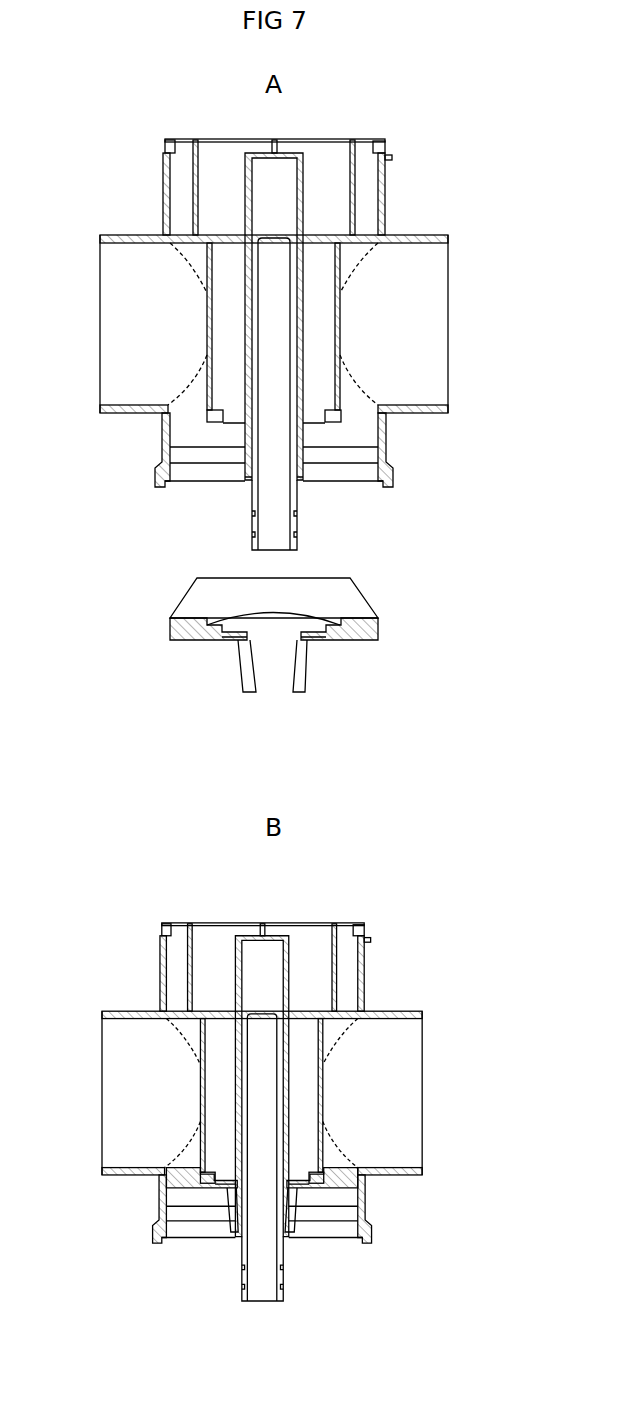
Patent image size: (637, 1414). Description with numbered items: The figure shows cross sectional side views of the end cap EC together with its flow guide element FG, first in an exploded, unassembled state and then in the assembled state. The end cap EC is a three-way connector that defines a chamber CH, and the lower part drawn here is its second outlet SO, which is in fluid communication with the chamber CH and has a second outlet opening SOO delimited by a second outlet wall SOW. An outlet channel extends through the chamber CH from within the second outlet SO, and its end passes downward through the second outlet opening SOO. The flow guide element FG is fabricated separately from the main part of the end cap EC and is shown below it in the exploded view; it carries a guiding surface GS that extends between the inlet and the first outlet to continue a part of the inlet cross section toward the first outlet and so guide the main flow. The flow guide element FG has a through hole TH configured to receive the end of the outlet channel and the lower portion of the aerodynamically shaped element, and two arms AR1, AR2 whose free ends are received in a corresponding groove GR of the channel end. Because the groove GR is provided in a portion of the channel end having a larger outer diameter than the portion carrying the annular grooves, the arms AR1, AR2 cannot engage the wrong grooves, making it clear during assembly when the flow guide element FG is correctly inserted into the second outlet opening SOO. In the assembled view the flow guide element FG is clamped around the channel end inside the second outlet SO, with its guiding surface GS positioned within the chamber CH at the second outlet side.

In FIG. 7A, the end cap EC is at (383, 192).
In FIG. 7B, the end cap EC is at (295, 958).
In FIG. 7A, the second outlet SO is at (220, 483).
In FIG. 7B, the second outlet SO is at (212, 1246).
In FIG. 7A, the second outlet wall SOW is at (158, 463).
In FIG. 7B, the second outlet wall SOW is at (212, 1209).
In FIG. 7A, the second outlet opening SOO is at (178, 487).
In FIG. 7B, the second outlet opening SOO is at (256, 1274).
In FIG. 7A, the groove GR is at (244, 479).
In FIG. 7A, the guiding surface GS is at (300, 650).
In FIG. 7B, the guiding surface GS is at (329, 1224).
In FIG. 7A, the flow guide element FG is at (360, 626).
In FIG. 7B, the flow guide element FG is at (335, 1242).
In FIG. 7A, the through hole TH is at (273, 621).
In FIG. 7A, the first arm AR1 is at (240, 662).
In FIG. 7A, the second arm AR2 is at (309, 664).
In FIG. 7B, the chamber CH is at (277, 1093).